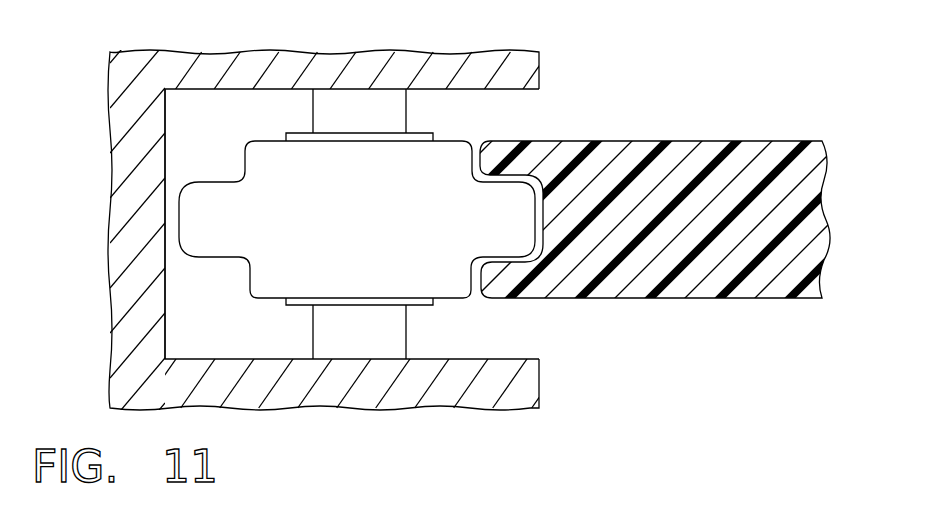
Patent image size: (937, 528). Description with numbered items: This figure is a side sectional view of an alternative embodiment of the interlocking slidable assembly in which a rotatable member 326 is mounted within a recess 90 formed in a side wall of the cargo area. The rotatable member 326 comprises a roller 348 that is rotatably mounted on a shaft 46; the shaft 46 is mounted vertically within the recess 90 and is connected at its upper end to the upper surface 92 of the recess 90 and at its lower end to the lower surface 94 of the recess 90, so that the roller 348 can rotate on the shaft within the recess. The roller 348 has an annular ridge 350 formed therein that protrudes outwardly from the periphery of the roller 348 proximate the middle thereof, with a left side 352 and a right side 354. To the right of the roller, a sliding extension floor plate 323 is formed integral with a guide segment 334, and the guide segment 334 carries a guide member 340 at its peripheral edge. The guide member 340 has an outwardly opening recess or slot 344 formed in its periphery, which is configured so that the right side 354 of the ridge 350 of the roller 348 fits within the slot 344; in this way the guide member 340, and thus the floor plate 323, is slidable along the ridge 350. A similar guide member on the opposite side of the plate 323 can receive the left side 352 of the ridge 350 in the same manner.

The shaft 46 is at (387, 115).
The recess 90 is at (231, 300).
The upper surface of recess 92 is at (453, 90).
The lower surface of recess 94 is at (428, 358).
The sliding extension floor plate 323 is at (763, 130).
The rotatable member 326 is at (266, 122).
The guide segment 334 is at (625, 207).
The guide member 340 is at (499, 290).
The slot 344 is at (483, 265).
The roller 348 is at (298, 165).
The annular ridge 350 is at (260, 197).
The left side of ridge 352 is at (160, 214).
The right side of ridge 354 is at (556, 218).